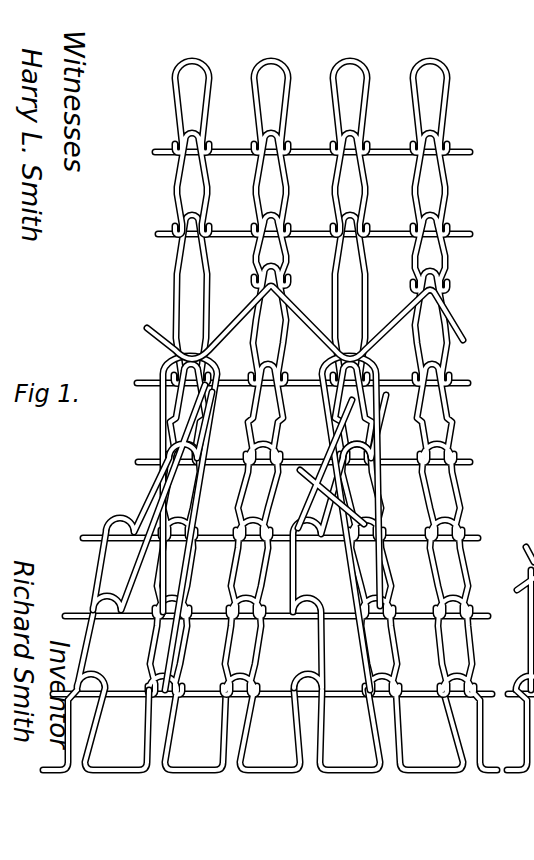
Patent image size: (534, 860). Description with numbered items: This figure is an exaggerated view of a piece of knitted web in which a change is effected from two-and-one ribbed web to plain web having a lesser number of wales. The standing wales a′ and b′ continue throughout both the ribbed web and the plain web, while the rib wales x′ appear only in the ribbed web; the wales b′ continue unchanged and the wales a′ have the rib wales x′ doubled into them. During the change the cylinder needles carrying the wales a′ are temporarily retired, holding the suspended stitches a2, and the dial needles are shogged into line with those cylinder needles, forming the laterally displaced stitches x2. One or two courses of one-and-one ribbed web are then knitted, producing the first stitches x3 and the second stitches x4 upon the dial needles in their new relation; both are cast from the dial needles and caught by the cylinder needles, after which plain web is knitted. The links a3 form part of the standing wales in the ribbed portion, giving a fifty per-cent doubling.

The standing wales a′ is at (305, 413).
The standing wales b′ is at (360, 413).
The suspended stitches a2 is at (384, 432).
The elongated links a3 is at (375, 298).
The rib wales x′ is at (288, 596).
The laterally displaced stitches x2 is at (330, 476).
The first stitches x3 is at (338, 420).
The second stitches x4 is at (362, 336).